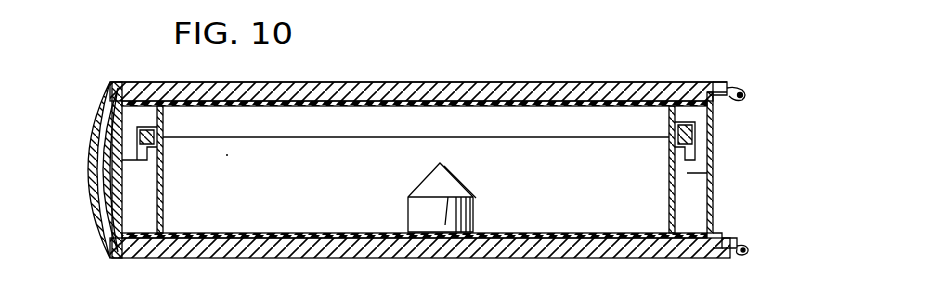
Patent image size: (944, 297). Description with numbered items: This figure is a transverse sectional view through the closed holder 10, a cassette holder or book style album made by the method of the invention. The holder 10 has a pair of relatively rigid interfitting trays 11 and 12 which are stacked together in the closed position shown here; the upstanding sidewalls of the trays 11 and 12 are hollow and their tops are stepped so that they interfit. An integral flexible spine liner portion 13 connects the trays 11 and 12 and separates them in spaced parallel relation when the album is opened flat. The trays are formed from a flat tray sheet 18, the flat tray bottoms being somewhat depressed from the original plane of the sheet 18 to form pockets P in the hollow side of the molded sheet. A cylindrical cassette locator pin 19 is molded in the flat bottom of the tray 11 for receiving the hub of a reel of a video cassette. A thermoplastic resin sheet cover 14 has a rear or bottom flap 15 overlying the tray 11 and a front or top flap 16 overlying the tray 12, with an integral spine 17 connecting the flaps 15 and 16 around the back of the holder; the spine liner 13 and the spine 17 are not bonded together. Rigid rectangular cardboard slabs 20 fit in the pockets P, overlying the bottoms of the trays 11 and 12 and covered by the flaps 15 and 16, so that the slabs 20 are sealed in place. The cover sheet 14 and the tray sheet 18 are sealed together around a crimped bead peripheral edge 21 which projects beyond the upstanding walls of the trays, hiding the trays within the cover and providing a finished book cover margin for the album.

The holder 10 is at (423, 159).
The tray 11 is at (668, 187).
The tray 12 is at (670, 117).
The spine liner portion 13 is at (95, 121).
The cover 14 is at (402, 79).
The bottom flap 15 is at (322, 258).
The top flap 16 is at (334, 82).
The spine 17 is at (93, 152).
The tray sheet 18 is at (170, 188).
The cassette locator pin 19 is at (471, 197).
The cardboard slab 20 is at (492, 100).
The crimped bead peripheral edge 21 is at (747, 90).
The pocket P is at (717, 102).